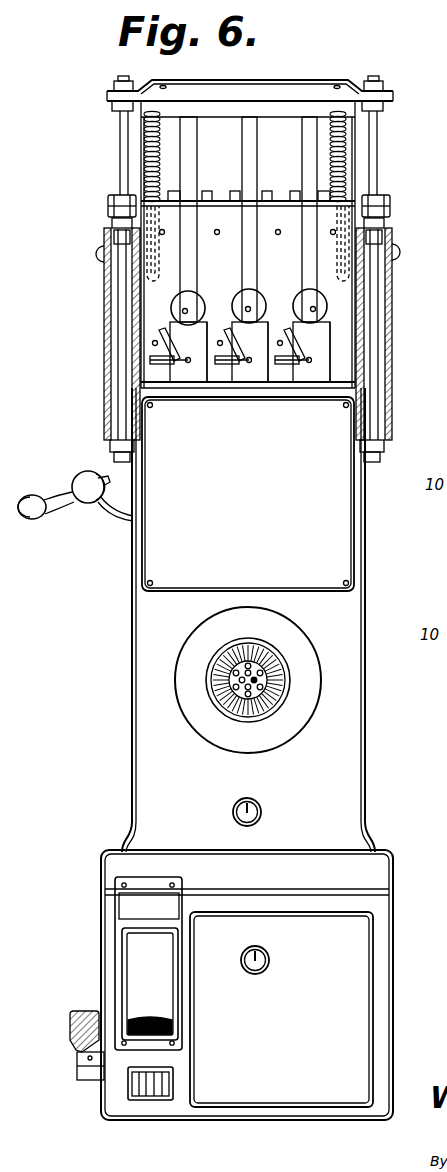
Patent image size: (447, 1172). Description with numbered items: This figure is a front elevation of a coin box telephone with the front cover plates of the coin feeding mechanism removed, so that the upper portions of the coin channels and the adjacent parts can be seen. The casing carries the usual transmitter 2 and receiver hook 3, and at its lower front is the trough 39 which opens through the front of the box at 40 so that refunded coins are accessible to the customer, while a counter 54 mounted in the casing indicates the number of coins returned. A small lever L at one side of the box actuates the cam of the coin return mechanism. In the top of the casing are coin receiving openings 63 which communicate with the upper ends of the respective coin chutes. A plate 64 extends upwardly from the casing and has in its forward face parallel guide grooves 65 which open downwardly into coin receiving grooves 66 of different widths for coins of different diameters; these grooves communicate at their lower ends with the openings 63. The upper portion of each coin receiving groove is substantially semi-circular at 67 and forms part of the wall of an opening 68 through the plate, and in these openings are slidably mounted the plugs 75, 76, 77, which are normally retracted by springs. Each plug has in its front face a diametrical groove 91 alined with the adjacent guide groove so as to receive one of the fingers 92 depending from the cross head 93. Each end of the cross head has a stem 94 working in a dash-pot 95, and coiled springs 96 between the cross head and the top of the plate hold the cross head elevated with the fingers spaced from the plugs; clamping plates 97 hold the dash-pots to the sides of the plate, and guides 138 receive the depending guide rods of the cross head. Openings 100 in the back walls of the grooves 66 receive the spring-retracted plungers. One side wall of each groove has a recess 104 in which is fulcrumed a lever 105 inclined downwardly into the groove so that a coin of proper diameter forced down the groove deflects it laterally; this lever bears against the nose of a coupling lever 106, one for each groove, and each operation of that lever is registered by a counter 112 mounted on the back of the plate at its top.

The transmitter 2 is at (283, 738).
The receiver hook 3 is at (112, 503).
The trough 39 is at (146, 1015).
The front opening of trough 40 is at (134, 952).
The counter 54 is at (148, 1100).
The coin receiving openings 63 is at (204, 385).
The plate 64 is at (208, 200).
The guide grooves 65 is at (242, 234).
The coin receiving grooves 66 is at (166, 368).
The semi-circular upper portion of coin receiving groove 67 is at (170, 303).
The openings 68 is at (251, 352).
The plug 75 is at (320, 300).
The plug 76 is at (246, 300).
The plug 77 is at (222, 288).
The diametrical groove 91 is at (183, 312).
The fingers 92 is at (188, 137).
The cross head 93 is at (240, 104).
The stem 94 is at (119, 125).
The dash-pot 95 is at (112, 360).
The coiled springs 96 is at (144, 146).
The clamping plates 97 is at (108, 230).
The openings 100 is at (188, 364).
The recess 104 is at (160, 338).
The lever 105 is at (160, 348).
The coupling lever 106 is at (163, 360).
The counter 112 is at (290, 198).
The guides 138 is at (120, 196).
The lever L is at (68, 1026).